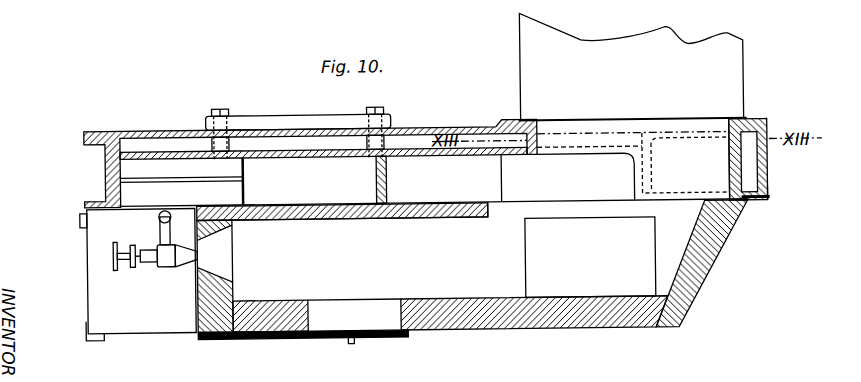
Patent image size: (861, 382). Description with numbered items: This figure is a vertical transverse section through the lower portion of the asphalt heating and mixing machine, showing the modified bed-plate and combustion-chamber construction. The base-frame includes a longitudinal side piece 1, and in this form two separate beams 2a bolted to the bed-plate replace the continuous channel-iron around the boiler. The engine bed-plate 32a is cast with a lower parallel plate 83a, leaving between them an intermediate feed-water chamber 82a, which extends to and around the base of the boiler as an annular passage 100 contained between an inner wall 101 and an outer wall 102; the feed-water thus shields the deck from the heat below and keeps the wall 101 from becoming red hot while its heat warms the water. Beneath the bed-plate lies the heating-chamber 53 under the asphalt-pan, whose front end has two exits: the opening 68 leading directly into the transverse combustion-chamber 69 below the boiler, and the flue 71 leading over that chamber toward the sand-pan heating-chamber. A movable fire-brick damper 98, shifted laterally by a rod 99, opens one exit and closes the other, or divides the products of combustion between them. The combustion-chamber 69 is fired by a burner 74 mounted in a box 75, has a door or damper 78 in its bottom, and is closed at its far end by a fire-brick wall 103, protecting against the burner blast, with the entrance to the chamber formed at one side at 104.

The longitudinal side piece 1 is at (106, 176).
The separate beam 2a is at (670, 146).
The bed-plate 32a is at (422, 129).
The heating-chamber 53 is at (425, 179).
The opening 68 is at (574, 156).
The transverse combustion-chamber 69 is at (360, 238).
The flue 71 is at (165, 151).
The burner 74 is at (155, 255).
The box 75 is at (138, 285).
The door or damper 78 is at (378, 338).
The feed-water chamber 82a is at (317, 131).
The lower parallel plate 83a is at (277, 158).
The damper 98 is at (406, 179).
The rod 99 is at (163, 178).
The annular passage 100 is at (753, 179).
The inner wall 101 is at (729, 164).
The outer wall 102 is at (770, 193).
The fire-brick wall 103 is at (700, 267).
The entrance 104 is at (612, 260).